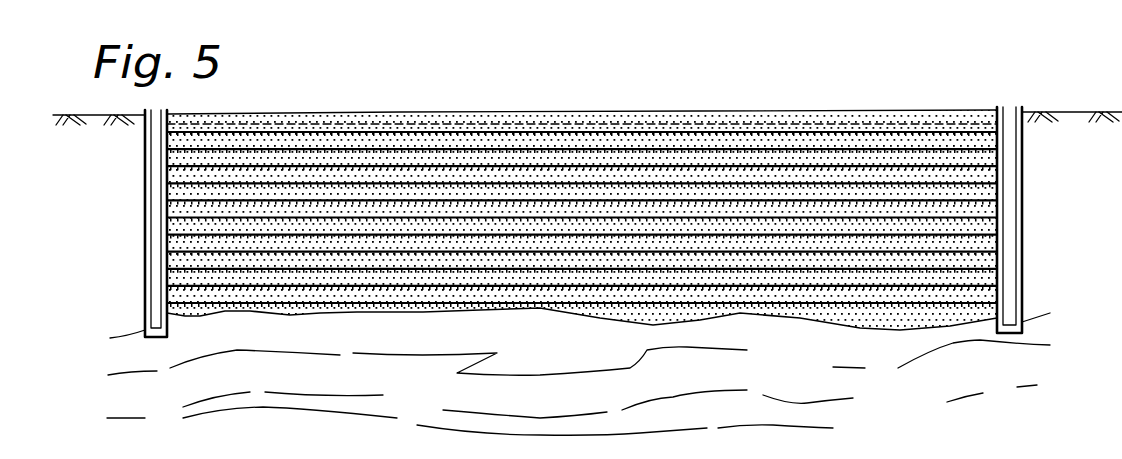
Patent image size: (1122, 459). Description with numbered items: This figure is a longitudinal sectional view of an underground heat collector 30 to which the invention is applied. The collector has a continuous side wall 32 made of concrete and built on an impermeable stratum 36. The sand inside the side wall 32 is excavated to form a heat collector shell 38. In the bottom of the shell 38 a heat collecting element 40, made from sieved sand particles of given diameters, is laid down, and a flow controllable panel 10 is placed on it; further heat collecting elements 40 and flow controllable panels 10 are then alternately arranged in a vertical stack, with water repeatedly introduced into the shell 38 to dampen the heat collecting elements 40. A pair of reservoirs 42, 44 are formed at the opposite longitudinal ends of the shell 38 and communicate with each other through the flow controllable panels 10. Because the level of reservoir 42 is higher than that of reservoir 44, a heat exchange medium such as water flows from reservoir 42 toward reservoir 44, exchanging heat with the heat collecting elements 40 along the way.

The underground heat collector 30 is at (459, 101).
The flow controllable panel 10 is at (700, 148).
The heat collecting element 40 is at (802, 142).
The reservoir 42 is at (115, 223).
The heat collector shell 38 is at (150, 245).
The continuous side wall 32 is at (1049, 220).
The reservoir 44 is at (1010, 247).
The impermeable stratum 36 is at (323, 357).